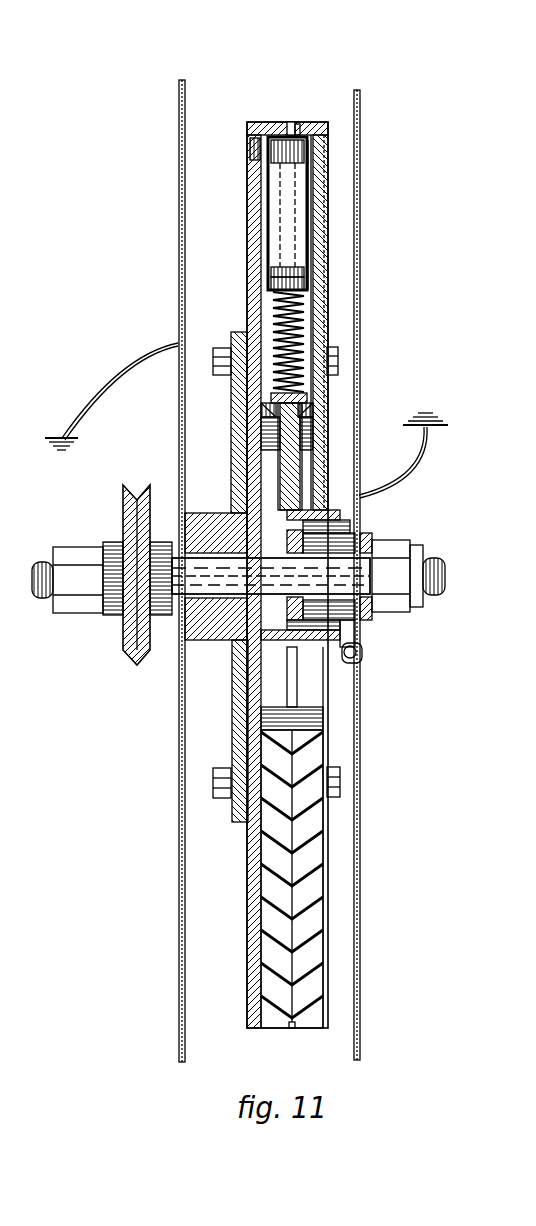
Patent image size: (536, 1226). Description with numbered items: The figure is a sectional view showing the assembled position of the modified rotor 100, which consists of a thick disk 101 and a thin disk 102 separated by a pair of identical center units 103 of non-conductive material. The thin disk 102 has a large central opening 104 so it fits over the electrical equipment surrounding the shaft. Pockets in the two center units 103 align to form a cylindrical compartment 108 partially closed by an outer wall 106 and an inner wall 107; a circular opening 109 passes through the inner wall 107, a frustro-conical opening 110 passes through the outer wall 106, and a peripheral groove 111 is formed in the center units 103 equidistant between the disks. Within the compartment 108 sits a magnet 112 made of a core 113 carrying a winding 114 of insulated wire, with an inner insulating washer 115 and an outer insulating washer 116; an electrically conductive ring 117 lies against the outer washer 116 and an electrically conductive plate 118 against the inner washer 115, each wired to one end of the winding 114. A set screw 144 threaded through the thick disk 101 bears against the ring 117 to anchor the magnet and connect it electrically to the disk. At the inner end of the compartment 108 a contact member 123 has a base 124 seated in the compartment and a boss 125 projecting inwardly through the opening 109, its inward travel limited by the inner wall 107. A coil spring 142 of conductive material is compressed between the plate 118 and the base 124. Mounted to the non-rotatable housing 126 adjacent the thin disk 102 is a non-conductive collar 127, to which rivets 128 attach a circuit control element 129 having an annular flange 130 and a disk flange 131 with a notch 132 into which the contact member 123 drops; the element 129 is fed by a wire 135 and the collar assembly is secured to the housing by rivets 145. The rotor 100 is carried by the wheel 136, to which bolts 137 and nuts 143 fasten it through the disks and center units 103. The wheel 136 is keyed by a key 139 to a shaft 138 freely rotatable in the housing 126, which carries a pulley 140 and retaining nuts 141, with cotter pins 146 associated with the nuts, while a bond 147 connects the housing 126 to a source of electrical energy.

The modified rotor 100 is at (330, 238).
The thick disk 101 is at (248, 220).
The thin disk 102 is at (328, 167).
The center units 103 is at (249, 185).
The central opening 104 is at (328, 435).
The outer wall 106 is at (307, 122).
The inner wall 107 is at (270, 413).
The cylindrical compartment 108 is at (272, 250).
The circular opening 109 is at (328, 403).
The opening 110 is at (289, 122).
The groove 111 is at (292, 1030).
The magnet 112 is at (262, 124).
The core 113 is at (296, 122).
The winding 114 is at (330, 248).
The inner insulating washer 115 is at (326, 280).
The outer insulating washer 116 is at (328, 148).
The electrically conductive ring 117 is at (328, 123).
The electrically conductive plate 118 is at (328, 292).
The contact member 123 is at (262, 472).
The base 124 is at (248, 400).
The boss 125 is at (276, 453).
The housing 126 is at (179, 275).
The collar 127 is at (323, 640).
The rivets 128 is at (364, 644).
The circuit control element 129 is at (283, 664).
The annular flange 130 is at (304, 640).
The disk flange 131 is at (180, 677).
The notch 132 is at (283, 712).
The wire 135 is at (418, 460).
The wheel 136 is at (245, 745).
The bolts 137 is at (340, 783).
The shaft 138 is at (445, 578).
The key 139 is at (197, 513).
The pulley 140 is at (130, 520).
The retaining nuts 141 is at (82, 552).
The coil spring 142 is at (328, 320).
The nuts 143 is at (223, 792).
The set screw 144 is at (251, 147).
The rivets 145 is at (362, 653).
The cotter pins 146 is at (436, 555).
The bond 147 is at (87, 387).